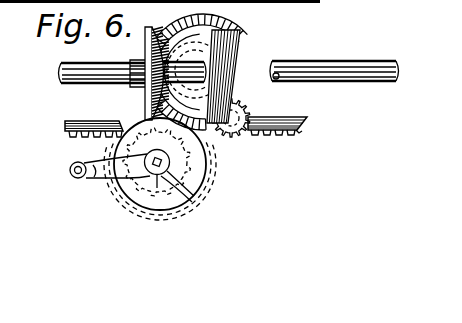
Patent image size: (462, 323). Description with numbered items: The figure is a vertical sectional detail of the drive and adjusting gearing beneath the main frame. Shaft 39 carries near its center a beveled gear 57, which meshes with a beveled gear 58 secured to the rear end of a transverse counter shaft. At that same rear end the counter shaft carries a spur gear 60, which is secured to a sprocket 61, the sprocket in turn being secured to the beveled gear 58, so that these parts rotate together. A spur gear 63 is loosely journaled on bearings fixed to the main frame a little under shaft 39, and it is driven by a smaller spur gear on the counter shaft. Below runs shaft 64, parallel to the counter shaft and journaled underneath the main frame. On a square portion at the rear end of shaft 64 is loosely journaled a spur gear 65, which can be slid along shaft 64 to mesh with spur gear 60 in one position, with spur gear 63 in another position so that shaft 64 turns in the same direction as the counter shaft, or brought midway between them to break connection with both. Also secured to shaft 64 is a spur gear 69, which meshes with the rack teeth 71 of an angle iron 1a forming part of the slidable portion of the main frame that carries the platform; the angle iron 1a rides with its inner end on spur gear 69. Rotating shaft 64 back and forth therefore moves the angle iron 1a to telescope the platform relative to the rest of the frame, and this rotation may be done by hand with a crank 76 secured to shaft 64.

The shaft 39 is at (80, 66).
The beveled gear 57 is at (148, 93).
The beveled gear 58 is at (171, 31).
The spur gear 60 is at (236, 38).
The sprocket 61 is at (208, 16).
The spur gear 63 is at (244, 111).
The shaft 64 is at (205, 173).
The spur gear 65 is at (206, 167).
The spur gear 69 is at (200, 201).
The rack teeth 71 is at (297, 133).
The angle iron 1a is at (304, 127).
The crank 76 is at (93, 175).